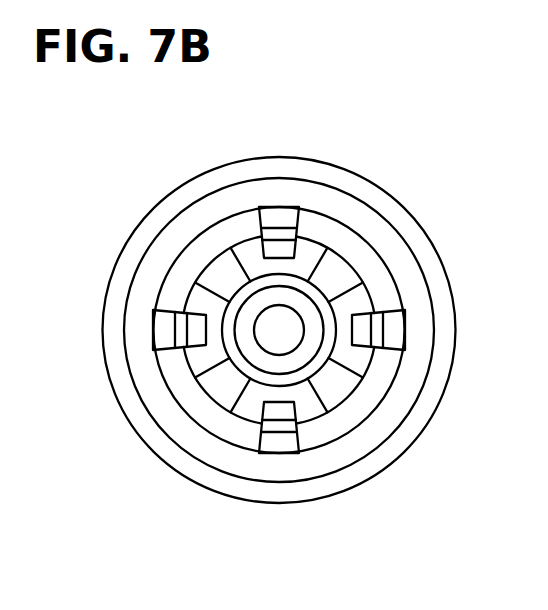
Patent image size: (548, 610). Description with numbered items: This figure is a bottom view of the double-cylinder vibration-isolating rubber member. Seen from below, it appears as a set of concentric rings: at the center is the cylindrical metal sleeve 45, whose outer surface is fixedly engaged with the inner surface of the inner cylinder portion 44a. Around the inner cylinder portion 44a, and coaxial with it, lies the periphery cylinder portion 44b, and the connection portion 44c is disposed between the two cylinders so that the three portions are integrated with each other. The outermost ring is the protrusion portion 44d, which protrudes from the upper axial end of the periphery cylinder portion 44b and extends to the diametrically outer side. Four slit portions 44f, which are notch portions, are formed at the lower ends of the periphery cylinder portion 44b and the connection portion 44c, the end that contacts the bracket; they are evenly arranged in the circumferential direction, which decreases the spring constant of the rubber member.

The inner cylinder portion 44a is at (297, 375).
The periphery cylinder portion 44b is at (392, 417).
The connection portion 44c is at (252, 410).
The protrusion portion 44d is at (182, 188).
The slit portion 44f is at (290, 217).
The metal sleeve 45 is at (248, 347).